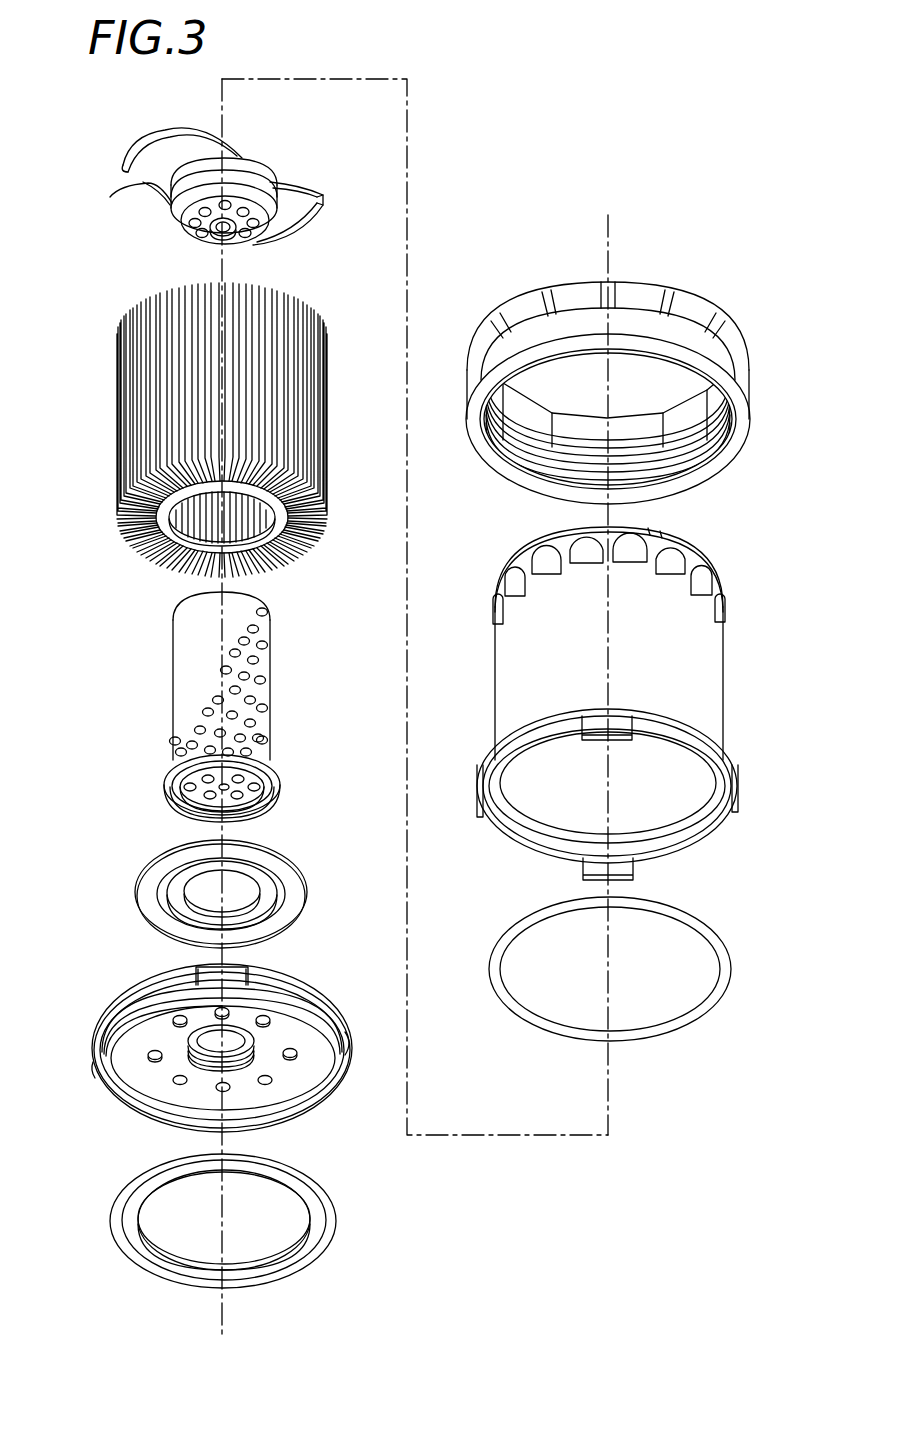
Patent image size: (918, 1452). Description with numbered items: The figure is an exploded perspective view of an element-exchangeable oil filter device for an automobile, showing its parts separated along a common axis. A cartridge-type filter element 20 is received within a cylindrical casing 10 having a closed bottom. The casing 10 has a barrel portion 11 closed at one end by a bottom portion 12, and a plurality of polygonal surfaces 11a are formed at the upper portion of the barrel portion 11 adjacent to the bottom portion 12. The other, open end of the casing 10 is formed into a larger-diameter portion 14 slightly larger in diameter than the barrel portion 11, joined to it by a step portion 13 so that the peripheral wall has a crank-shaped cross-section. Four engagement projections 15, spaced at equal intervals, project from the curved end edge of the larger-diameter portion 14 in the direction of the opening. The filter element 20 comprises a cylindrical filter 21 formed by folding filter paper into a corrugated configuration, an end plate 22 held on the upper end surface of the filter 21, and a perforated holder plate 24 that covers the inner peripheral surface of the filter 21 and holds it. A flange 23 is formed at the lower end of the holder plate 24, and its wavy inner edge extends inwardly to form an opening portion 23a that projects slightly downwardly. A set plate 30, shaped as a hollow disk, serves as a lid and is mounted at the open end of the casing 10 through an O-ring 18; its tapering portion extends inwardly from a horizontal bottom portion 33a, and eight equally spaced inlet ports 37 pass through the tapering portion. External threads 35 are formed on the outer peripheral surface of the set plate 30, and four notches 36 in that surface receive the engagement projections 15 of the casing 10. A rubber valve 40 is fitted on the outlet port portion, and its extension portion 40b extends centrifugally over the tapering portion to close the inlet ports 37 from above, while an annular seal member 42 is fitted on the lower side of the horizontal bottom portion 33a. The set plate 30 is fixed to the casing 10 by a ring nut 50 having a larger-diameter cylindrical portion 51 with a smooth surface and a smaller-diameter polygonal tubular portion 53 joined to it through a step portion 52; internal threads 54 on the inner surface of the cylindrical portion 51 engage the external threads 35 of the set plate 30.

The casing 10 is at (730, 660).
The barrel portion 11 is at (494, 656).
The polygonal surfaces 11a is at (710, 575).
The bottom portion 12 is at (650, 531).
The step portion 13 is at (688, 835).
The larger-diameter portion 14 is at (692, 732).
The engagement projections 15 is at (646, 745).
The O-ring 18 is at (740, 1004).
The filter element 20 is at (58, 185).
The cylindrical filter 21 is at (118, 444).
The end plate 22 is at (112, 197).
The flange 23 is at (165, 778).
The opening portion 23a is at (268, 800).
The holder plate 24 is at (160, 700).
The set plate 30 is at (90, 1043).
The horizontal bottom portion 33a is at (162, 1072).
The external threads 35 is at (334, 1001).
The notches 36 is at (240, 972).
The inlet ports 37 is at (276, 1077).
The valve 40 is at (128, 892).
The extension portion 40b is at (290, 901).
The annular seal member 42 is at (104, 1224).
The ring nut 50 is at (762, 378).
The cylindrical portion 51 is at (495, 385).
The step portion 52 is at (690, 445).
The polygonal tubular portion 53 is at (510, 318).
The internal threads 54 is at (522, 468).